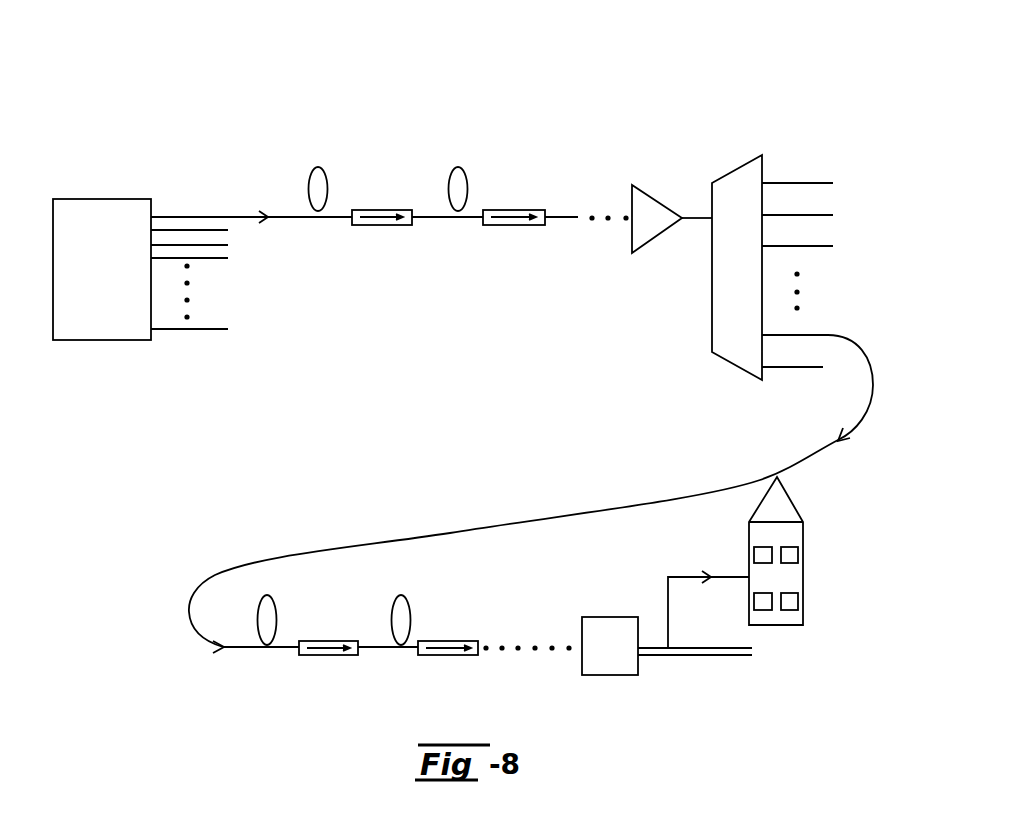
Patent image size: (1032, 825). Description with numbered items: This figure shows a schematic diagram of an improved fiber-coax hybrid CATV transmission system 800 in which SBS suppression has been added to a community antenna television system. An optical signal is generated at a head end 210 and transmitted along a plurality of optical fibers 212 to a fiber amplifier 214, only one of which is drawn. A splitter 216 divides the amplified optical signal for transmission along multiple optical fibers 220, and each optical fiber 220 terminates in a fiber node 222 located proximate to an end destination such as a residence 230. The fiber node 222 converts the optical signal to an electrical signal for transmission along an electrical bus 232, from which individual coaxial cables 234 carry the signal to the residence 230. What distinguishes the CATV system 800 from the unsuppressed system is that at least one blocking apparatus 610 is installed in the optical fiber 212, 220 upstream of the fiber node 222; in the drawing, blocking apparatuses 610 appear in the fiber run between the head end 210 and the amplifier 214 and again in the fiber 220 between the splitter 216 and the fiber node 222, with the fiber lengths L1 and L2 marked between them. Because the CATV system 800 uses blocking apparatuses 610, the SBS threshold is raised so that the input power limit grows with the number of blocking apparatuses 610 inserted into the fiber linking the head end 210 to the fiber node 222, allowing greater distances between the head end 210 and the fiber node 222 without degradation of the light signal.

The head end 210 is at (103, 199).
The optical fibers 212 is at (187, 216).
The fiber amplifier 214 is at (660, 199).
The splitter 216 is at (733, 168).
The optical fibers 220 is at (800, 182).
The fiber node 222 is at (612, 617).
The residence 230 is at (795, 497).
The electrical bus 232 is at (691, 660).
The coaxial cables 234 is at (690, 575).
The blocking apparatus 610 is at (383, 210).
The improved CATV system 800 is at (392, 124).
The fiber length L1 is at (317, 167).
The fiber length L2 is at (457, 167).